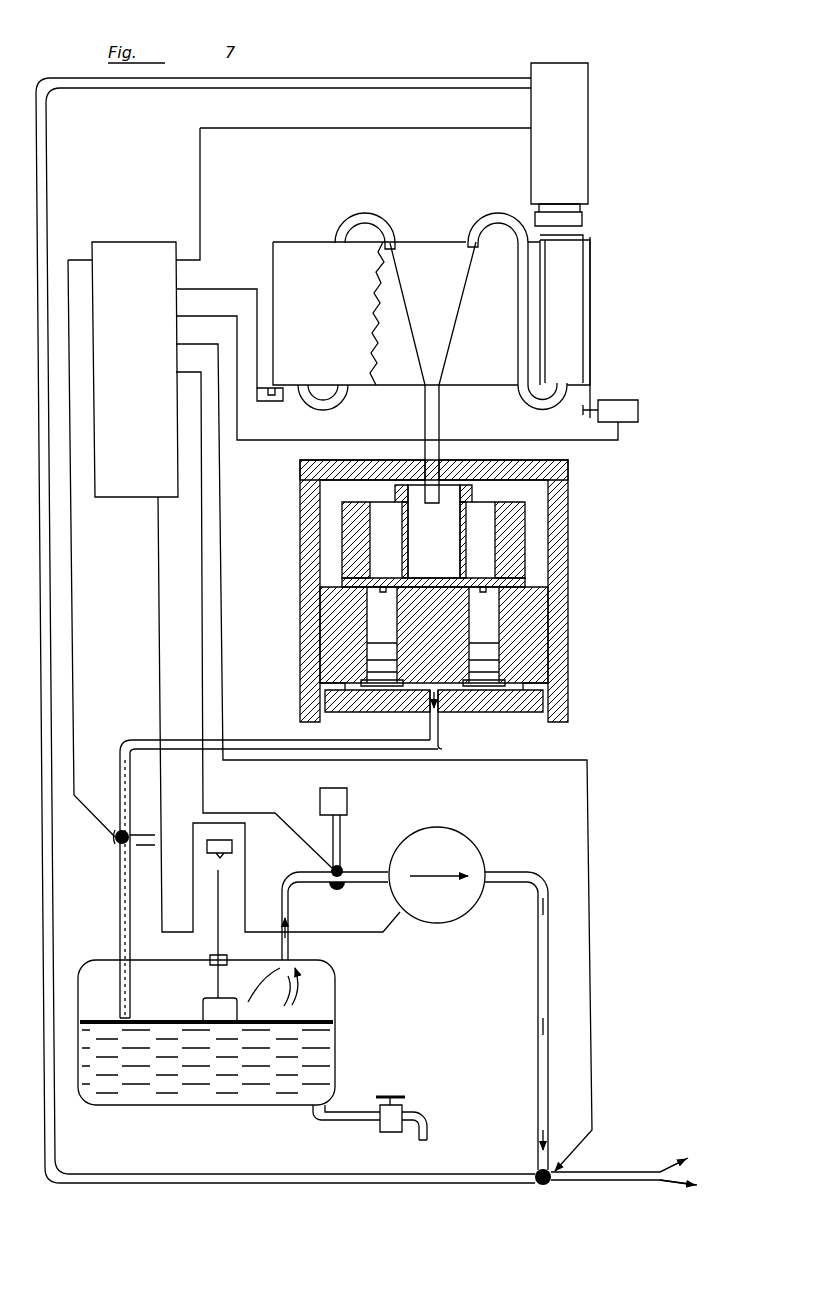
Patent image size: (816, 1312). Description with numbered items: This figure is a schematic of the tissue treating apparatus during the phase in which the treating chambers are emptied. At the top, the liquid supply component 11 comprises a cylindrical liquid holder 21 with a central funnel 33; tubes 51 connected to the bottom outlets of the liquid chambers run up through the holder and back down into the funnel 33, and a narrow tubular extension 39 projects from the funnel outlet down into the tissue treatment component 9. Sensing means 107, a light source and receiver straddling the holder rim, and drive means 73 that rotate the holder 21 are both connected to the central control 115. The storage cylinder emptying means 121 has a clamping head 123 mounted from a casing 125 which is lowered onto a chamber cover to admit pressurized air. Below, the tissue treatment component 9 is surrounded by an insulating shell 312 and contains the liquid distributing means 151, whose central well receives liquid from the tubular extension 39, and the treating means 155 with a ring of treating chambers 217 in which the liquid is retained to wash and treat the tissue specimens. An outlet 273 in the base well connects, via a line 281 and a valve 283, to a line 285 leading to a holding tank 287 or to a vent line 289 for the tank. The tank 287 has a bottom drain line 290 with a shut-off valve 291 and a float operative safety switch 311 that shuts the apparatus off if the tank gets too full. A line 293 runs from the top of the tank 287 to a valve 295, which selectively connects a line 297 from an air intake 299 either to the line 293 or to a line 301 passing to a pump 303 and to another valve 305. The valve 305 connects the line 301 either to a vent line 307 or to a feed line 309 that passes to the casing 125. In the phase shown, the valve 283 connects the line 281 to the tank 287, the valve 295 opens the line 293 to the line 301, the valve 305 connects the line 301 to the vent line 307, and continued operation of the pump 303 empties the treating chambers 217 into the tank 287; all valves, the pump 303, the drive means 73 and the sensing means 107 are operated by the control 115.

The tissue treatment component 9 is at (446, 601).
The liquid supply component 11 is at (409, 299).
The liquid holder 21 is at (298, 240).
The funnel 33 is at (398, 290).
The tubular extension 39 is at (441, 416).
The tube 51 is at (392, 214).
The drive means 73 is at (613, 390).
The sensing means 107 is at (261, 403).
The central control 115 is at (146, 240).
The storage cylinder emptying means 121 is at (594, 224).
The clamping head 123 is at (585, 227).
The casing 125 is at (590, 156).
The liquid distributing means 151 is at (527, 510).
The treating means 155 is at (538, 583).
The treating chambers 217 is at (493, 627).
The outlet 273 is at (445, 700).
The line 281 is at (278, 722).
The valve 283 is at (114, 845).
The line 285 is at (133, 954).
The holding tank 287 is at (268, 950).
The vent line 289 is at (148, 846).
The drain line 290 is at (348, 1112).
The shut-off valve 291 is at (405, 1106).
The line 293 is at (293, 948).
The valve 295 is at (336, 892).
The line 297 is at (343, 840).
The air intake 299 is at (348, 802).
The line 301 is at (536, 970).
The pump 303 is at (470, 836).
The valve 305 is at (538, 1184).
The vent line 307 is at (610, 1172).
The feed line 309 is at (306, 1176).
The float operative safety switch 311 is at (220, 886).
The insulating shell 312 is at (570, 468).